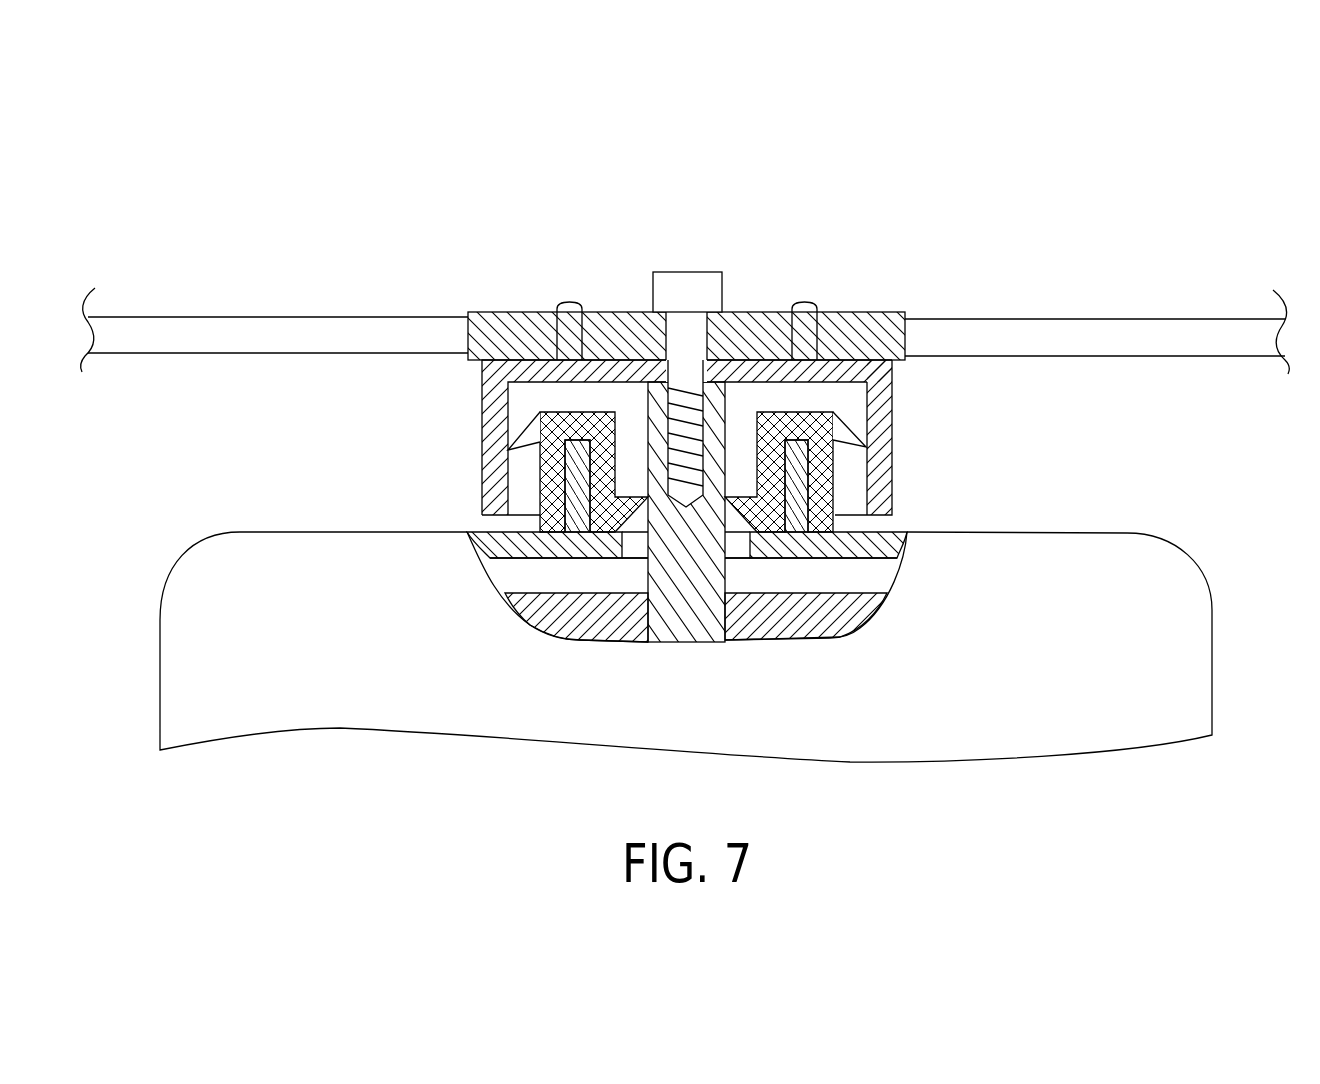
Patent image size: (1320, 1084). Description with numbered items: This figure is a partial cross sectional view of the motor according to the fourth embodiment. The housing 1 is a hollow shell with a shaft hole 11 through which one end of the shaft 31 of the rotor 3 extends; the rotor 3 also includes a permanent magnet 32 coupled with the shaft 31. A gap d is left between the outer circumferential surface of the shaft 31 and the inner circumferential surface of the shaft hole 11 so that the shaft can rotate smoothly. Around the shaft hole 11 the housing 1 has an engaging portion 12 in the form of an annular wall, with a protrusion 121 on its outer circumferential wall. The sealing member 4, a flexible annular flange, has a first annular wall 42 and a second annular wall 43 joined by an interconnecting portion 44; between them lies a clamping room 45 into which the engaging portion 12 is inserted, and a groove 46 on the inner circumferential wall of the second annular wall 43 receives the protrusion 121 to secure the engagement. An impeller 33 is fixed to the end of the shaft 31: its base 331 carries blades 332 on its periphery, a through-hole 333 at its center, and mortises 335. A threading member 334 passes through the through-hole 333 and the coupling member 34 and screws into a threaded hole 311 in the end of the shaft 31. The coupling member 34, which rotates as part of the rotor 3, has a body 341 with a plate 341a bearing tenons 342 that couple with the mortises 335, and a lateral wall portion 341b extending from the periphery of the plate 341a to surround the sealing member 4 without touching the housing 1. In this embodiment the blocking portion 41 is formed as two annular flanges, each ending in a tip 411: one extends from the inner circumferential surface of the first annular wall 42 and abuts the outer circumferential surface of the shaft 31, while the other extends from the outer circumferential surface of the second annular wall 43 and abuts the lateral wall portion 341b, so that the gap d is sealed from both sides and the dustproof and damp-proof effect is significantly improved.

The housing 1 is at (1172, 522).
The shaft hole 11 is at (728, 500).
The engaging portion 12 is at (795, 440).
The protrusion 121 is at (552, 498).
The rotor 3 is at (533, 591).
The shaft 31 is at (662, 570).
The permanent magnet 32 is at (605, 620).
The threaded hole 311 is at (655, 377).
The impeller 33 is at (685, 278).
The base 331 is at (872, 326).
The blades 332 is at (1105, 318).
The through-hole 333 is at (706, 333).
The threading member 334 is at (682, 332).
The mortises 335 is at (815, 335).
The coupling member 34 is at (470, 403).
The body 341 is at (672, 278).
The plate 341a is at (522, 367).
The lateral wall portion 341b is at (495, 400).
The tenons 342 is at (804, 317).
The sealing member 4 is at (699, 640).
The blocking portion 41 is at (872, 408).
The tip 411 is at (872, 445).
The first annular wall 42 is at (600, 450).
The second annular wall 43 is at (553, 473).
The interconnecting portion 44 is at (583, 418).
The clamping room 45 is at (812, 475).
The groove 46 is at (815, 500).
The gap d is at (741, 555).